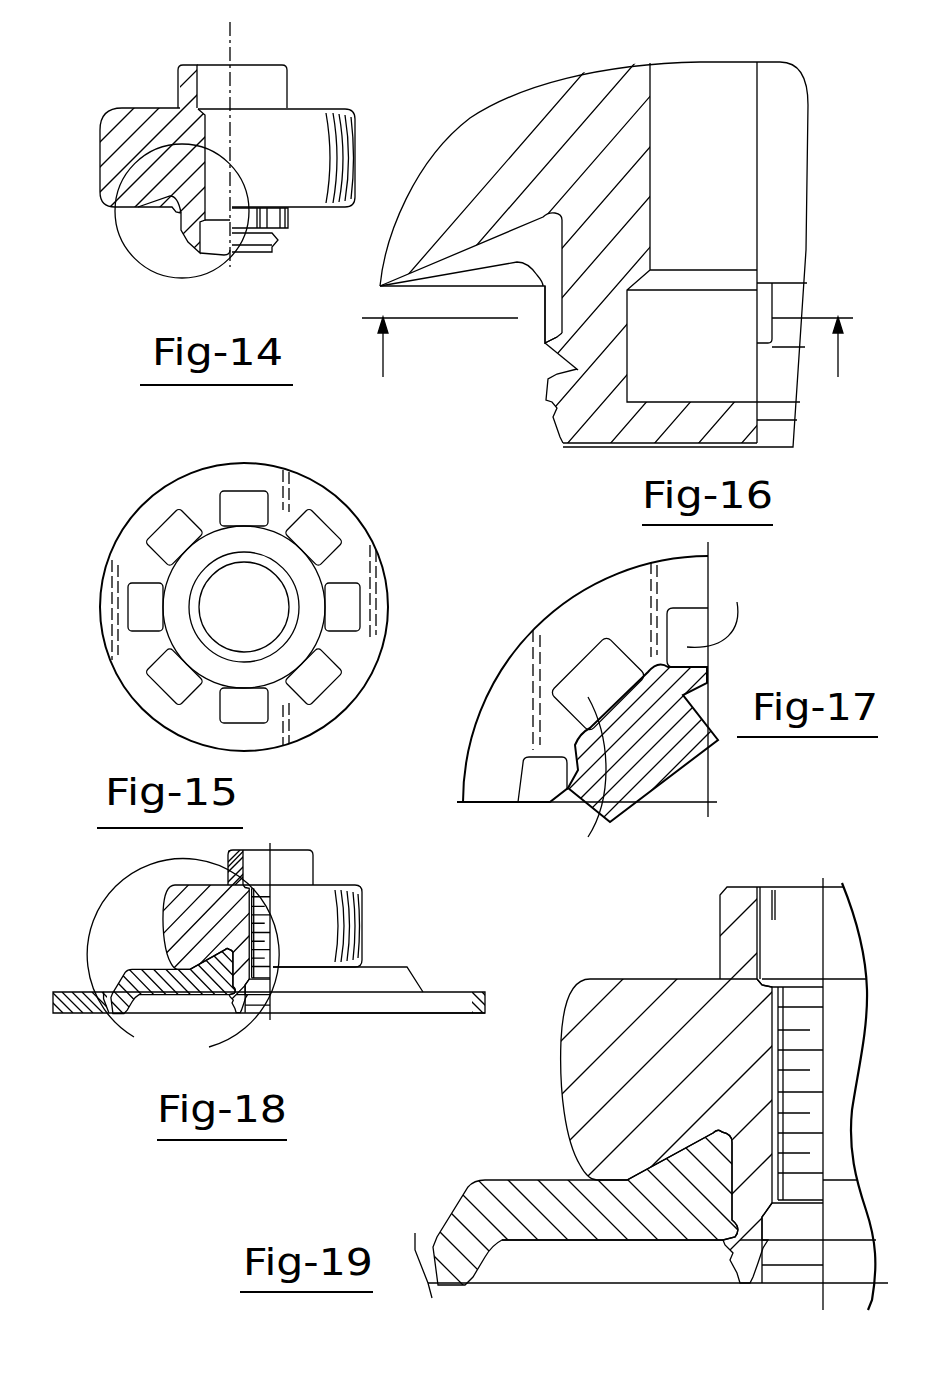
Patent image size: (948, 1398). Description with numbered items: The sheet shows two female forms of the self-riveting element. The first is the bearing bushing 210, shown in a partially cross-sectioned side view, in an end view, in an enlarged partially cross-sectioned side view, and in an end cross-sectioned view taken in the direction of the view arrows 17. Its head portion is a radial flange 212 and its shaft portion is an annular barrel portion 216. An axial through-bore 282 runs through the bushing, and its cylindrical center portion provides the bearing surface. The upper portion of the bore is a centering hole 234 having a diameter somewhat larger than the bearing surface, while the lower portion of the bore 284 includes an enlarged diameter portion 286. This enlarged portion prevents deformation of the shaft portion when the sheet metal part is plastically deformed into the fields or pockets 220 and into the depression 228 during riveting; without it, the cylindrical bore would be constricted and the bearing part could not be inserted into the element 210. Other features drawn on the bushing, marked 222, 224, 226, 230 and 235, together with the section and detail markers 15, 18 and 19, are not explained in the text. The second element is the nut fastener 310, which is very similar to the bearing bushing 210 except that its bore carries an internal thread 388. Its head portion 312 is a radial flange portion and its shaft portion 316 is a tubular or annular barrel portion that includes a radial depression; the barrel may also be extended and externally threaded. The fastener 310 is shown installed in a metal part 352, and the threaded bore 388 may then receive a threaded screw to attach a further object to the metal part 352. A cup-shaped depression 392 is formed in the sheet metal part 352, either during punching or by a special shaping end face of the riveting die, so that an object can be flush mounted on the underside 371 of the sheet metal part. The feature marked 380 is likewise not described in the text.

In FIG. 14, the bearing bushing 210 is at (294, 86).
In FIG. 14, the radial flange 212 is at (98, 178).
In FIG. 14, the annular barrel portion 216 is at (190, 253).
In FIG. 16, the annular barrel portion 216 is at (592, 432).
In FIG. 15, the pockets 220 is at (172, 675).
In FIG. 17, the pockets 220 is at (535, 793).
In FIG. 15, the grommet flange 222 is at (150, 567).
In FIG. 16, the grommet flange 222 is at (516, 226).
In FIG. 17, the grommet flange 222 is at (550, 733).
In FIG. 16, the tongue 224 is at (545, 327).
In FIG. 16, the recess 226 is at (543, 347).
In FIG. 14, the depression 228 is at (272, 230).
In FIG. 16, the depression 228 is at (557, 377).
In FIG. 17, the outer wall 230 is at (592, 627).
In FIG. 14, the centering hole 234 is at (197, 100).
In FIG. 14, the head 235 is at (233, 98).
In FIG. 16, the head 235 is at (750, 212).
In FIG. 14, the axial through-bore 282 is at (205, 152).
In FIG. 14, the lower portion of the bore 284 is at (205, 175).
In FIG. 16, the lower portion of the bore 284 is at (650, 143).
In FIG. 16, the enlarged diameter portion 286 is at (628, 347).
In FIG. 18, the nut fastener 310 is at (316, 872).
In FIG. 19, the nut fastener 310 is at (720, 950).
In FIG. 18, the head portion 312 is at (160, 920).
In FIG. 19, the head portion 312 is at (560, 1075).
In FIG. 19, the shaft portion 316 is at (732, 1272).
In FIG. 18, the metal part 352 is at (458, 1000).
In FIG. 19, the metal part 352 is at (447, 1232).
In FIG. 18, the underside 371 is at (355, 1012).
In FIG. 19, the underside 371 is at (553, 1290).
In FIG. 19, the bracket flange 380 is at (702, 1240).
In FIG. 19, the internal thread 388 is at (785, 1083).
In FIG. 18, the cup-shaped depression 392 is at (198, 1002).
In FIG. 19, the cup-shaped depression 392 is at (550, 1258).
In FIG. 14, the section line 15 is at (230, 282).
In FIG. 16, the view arrows 17 is at (611, 409).
In FIG. 18, the detail circle 18 is at (183, 965).
In FIG. 14, the detail circle 19 is at (182, 211).